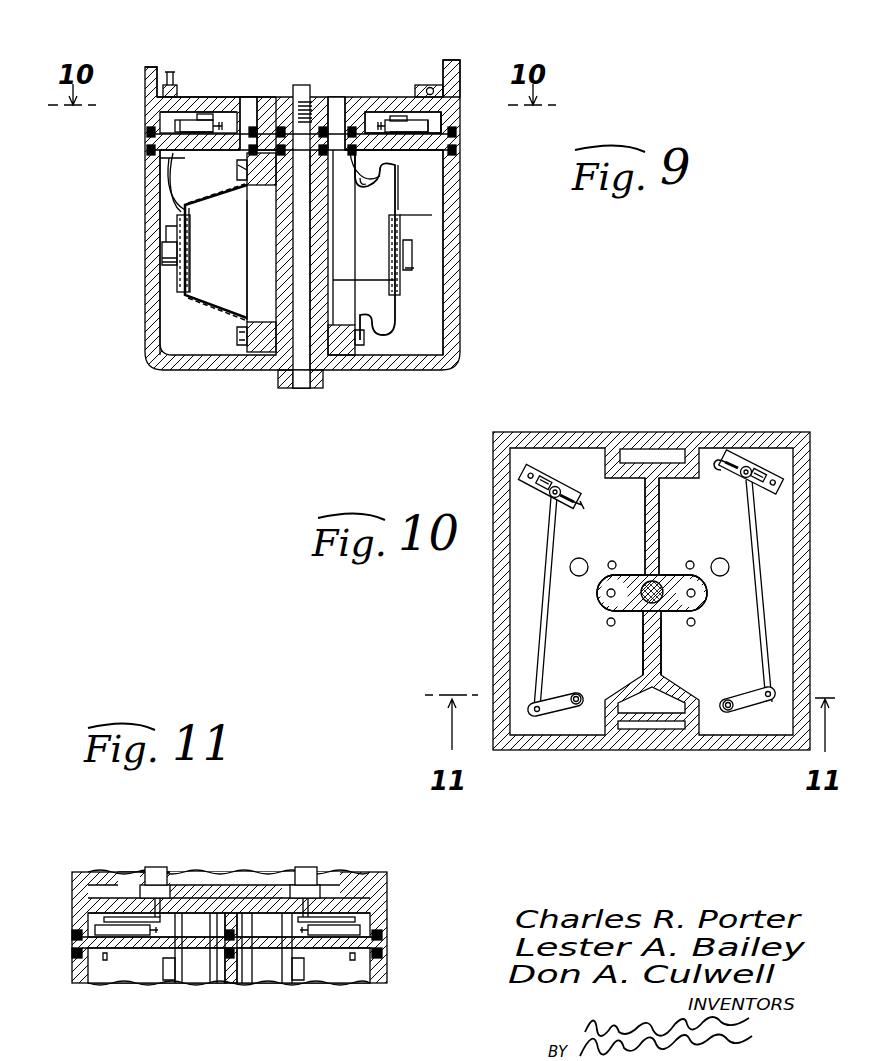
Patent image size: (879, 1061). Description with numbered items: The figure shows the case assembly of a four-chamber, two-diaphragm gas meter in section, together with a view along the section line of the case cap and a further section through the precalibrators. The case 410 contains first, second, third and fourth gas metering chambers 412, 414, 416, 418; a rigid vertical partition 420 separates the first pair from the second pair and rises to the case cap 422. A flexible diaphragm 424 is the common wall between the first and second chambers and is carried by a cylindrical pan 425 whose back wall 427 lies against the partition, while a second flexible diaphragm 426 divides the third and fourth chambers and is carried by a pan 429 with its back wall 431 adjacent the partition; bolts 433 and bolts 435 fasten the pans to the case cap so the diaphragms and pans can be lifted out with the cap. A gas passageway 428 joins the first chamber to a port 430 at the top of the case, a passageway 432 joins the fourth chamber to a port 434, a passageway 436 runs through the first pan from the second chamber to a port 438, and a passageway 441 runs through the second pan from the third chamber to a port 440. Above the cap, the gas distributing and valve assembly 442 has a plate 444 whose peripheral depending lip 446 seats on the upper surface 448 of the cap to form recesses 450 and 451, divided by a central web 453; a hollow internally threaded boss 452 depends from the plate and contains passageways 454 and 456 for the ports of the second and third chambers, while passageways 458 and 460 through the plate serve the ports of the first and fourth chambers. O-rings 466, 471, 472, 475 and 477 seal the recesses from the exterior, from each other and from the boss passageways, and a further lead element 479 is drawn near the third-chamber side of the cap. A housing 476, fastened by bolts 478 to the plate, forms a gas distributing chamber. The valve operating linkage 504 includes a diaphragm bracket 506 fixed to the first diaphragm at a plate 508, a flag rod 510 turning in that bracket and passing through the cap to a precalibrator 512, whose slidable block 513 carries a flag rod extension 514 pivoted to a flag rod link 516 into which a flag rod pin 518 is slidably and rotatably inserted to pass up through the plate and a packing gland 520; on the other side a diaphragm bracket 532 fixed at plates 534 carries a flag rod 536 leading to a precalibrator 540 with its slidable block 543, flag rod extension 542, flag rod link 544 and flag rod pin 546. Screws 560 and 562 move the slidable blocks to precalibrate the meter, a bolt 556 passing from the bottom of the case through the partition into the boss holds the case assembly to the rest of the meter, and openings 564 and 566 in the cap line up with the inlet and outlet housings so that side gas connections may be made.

In FIG. 9, the case 410 is at (458, 274).
In FIG. 9, the first gas metering chamber 412 is at (176, 202).
In FIG. 9, the second gas metering chamber 414 is at (234, 249).
In FIG. 9, the third gas metering chamber 416 is at (397, 213).
In FIG. 9, the fourth gas metering chamber 418 is at (420, 246).
In FIG. 9, the rigid vertical partition 420 is at (318, 355).
In FIG. 9, the case cap 422 is at (448, 134).
In FIG. 9, the flexible diaphragm 424 is at (218, 310).
In FIG. 9, the cylindrical pan 425 is at (262, 348).
In FIG. 9, the flexible diaphragm 426 is at (378, 332).
In FIG. 9, the back wall 427 is at (248, 280).
In FIG. 9, the gas passageway 428 is at (162, 158).
In FIG. 9, the cylindrically shaped pan 429 is at (345, 350).
In FIG. 9, the port 430 is at (245, 110).
In FIG. 10, the port 430 is at (578, 557).
In FIG. 9, the back wall 431 is at (390, 282).
In FIG. 9, the passageway 432 is at (425, 149).
In FIG. 10, the bolts 433 is at (613, 560).
In FIG. 9, the port 434 is at (428, 110).
In FIG. 10, the port 434 is at (720, 557).
In FIG. 10, the bolts 435 is at (690, 560).
In FIG. 9, the passageway 436 is at (250, 208).
In FIG. 9, the port 438 is at (281, 97).
In FIG. 9, the port 440 is at (358, 112).
In FIG. 9, the passageway 441 is at (370, 182).
In FIG. 9, the gas distributing and valve assembly 442 is at (147, 86).
In FIG. 9, the plate 444 is at (178, 112).
In FIG. 9, the peripheral depending lip 446 is at (147, 107).
In FIG. 9, the upper surface 448 is at (450, 100).
In FIG. 9, the recess 450 is at (437, 92).
In FIG. 9, the recess 451 is at (196, 113).
In FIG. 9, the boss 452 is at (320, 97).
In FIG. 10, the web 453 is at (662, 648).
In FIG. 11, the web 453 is at (230, 925).
In FIG. 9, the passageway 454 is at (264, 97).
In FIG. 9, the passageway 456 is at (340, 125).
In FIG. 9, the passageway 458 is at (225, 97).
In FIG. 9, the passageway 460 is at (386, 119).
In FIG. 9, the O-ring 466 is at (146, 131).
In FIG. 11, the O-ring 466 is at (383, 938).
In FIG. 9, the O-ring 471 is at (146, 148).
In FIG. 11, the O-ring 471 is at (383, 954).
In FIG. 9, the O-ring 472 is at (243, 152).
In FIG. 9, the O-ring 475 is at (246, 168).
In FIG. 9, the housing 476 is at (455, 62).
In FIG. 9, the O-ring 477 is at (301, 102).
In FIG. 9, the bolts 478 is at (167, 84).
In FIG. 9, the lead 479 is at (356, 160).
In FIG. 9, the valve operating linkage 504 is at (164, 262).
In FIG. 9, the diaphragm bracket 506 is at (164, 242).
In FIG. 9, the plate 508 is at (190, 252).
In FIG. 9, the flag rod 510 is at (168, 186).
In FIG. 10, the flag rod 510 is at (528, 472).
In FIG. 10, the precalibrator 512 is at (575, 493).
In FIG. 11, the precalibrator 512 is at (98, 925).
In FIG. 10, the slidable block 513 is at (554, 486).
In FIG. 10, the flag rod extension 514 is at (548, 640).
In FIG. 10, the flag rod link 516 is at (553, 703).
In FIG. 10, the flag rod pin 518 is at (582, 698).
In FIG. 11, the packing gland 520 is at (312, 866).
In FIG. 9, the diaphragm bracket 532 is at (412, 262).
In FIG. 9, the plates 534 is at (401, 238).
In FIG. 9, the flag rod 536 is at (405, 175).
In FIG. 10, the flag rod 536 is at (777, 478).
In FIG. 10, the precalibrator 540 is at (746, 466).
In FIG. 11, the precalibrator 540 is at (330, 935).
In FIG. 10, the flag rod extension 542 is at (745, 500).
In FIG. 10, the slidable block 543 is at (752, 482).
In FIG. 10, the flag rod link 544 is at (750, 690).
In FIG. 10, the flag rod pin 546 is at (728, 702).
In FIG. 9, the bolt 556 is at (298, 382).
In FIG. 10, the screw 560 is at (585, 506).
In FIG. 10, the screw 562 is at (719, 464).
In FIG. 10, the opening 564 is at (653, 450).
In FIG. 10, the opening 566 is at (655, 712).